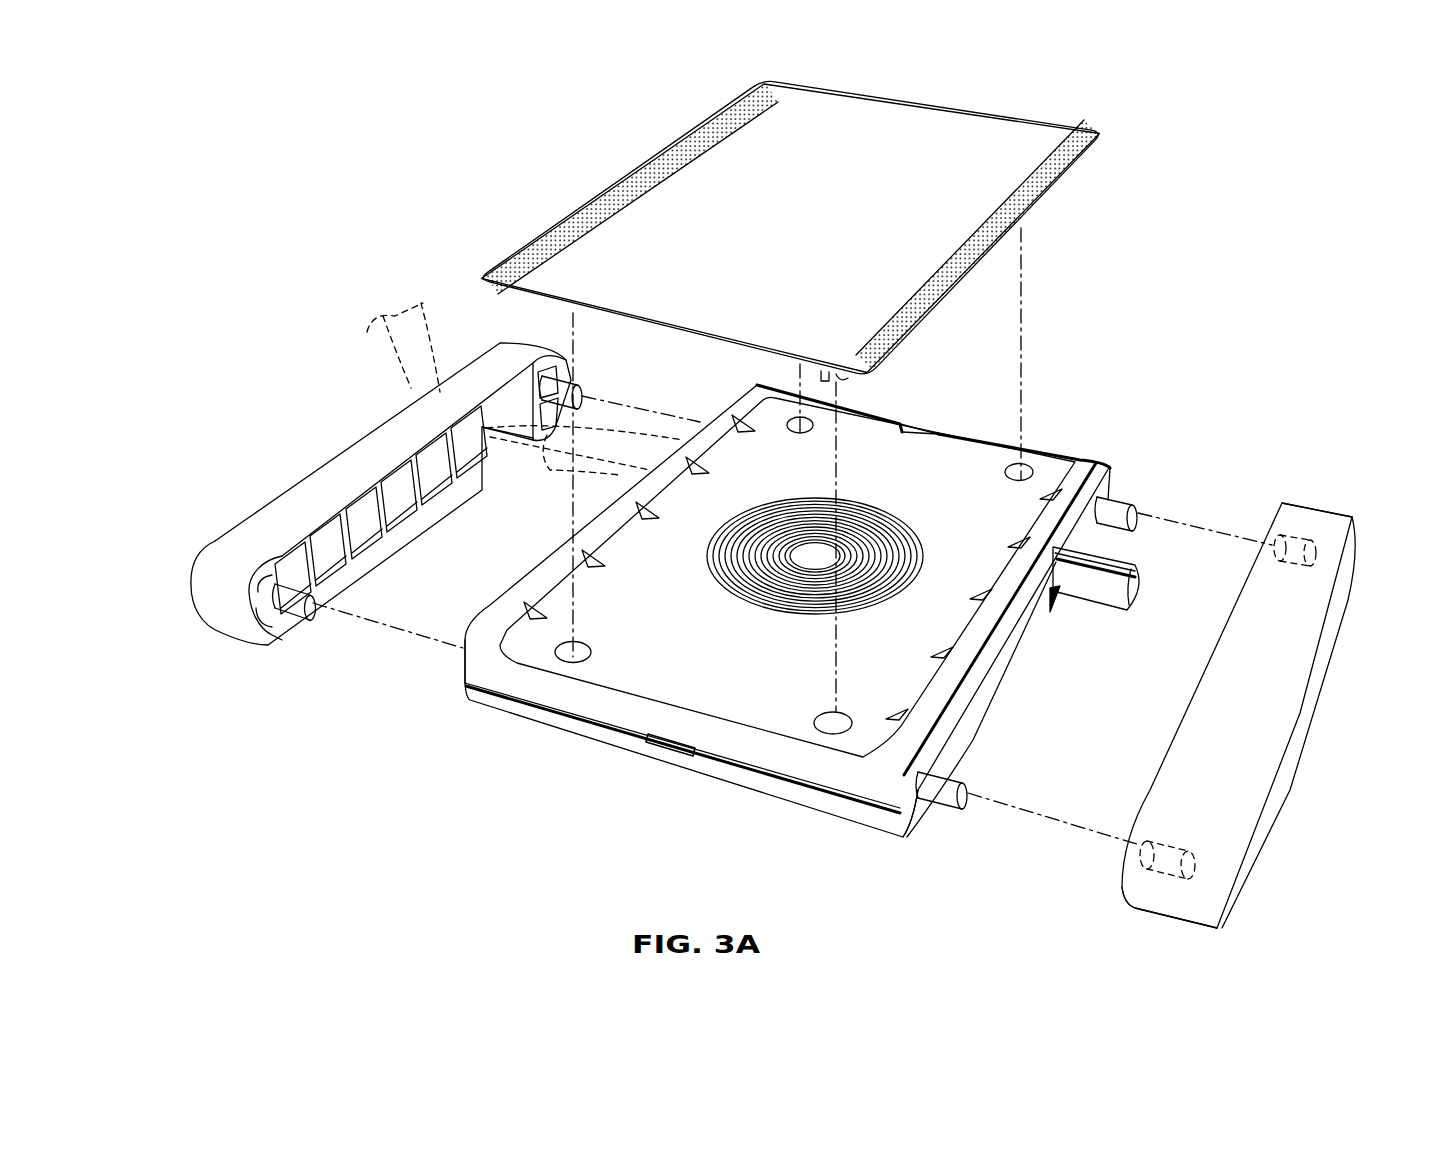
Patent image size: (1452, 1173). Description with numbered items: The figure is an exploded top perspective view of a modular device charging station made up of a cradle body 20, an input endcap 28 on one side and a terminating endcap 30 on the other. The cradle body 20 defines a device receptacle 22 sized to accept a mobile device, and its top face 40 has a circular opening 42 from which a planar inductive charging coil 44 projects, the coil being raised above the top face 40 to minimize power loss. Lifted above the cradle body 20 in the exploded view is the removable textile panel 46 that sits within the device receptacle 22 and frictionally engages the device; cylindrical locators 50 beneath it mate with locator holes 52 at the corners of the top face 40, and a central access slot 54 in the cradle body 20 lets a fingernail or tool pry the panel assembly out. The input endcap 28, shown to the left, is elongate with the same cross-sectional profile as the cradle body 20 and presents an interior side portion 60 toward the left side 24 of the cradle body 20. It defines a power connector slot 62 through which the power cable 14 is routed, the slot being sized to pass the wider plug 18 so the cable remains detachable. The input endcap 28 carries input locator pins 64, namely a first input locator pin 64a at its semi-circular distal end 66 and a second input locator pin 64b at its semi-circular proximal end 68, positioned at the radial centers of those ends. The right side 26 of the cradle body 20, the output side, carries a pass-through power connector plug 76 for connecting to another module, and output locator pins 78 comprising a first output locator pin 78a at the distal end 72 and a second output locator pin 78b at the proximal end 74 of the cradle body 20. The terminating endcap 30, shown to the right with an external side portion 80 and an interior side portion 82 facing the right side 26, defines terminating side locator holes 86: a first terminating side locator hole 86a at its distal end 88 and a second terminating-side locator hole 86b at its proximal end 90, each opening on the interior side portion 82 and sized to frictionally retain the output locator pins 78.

The power cable 14 is at (407, 347).
The plug 18 is at (630, 447).
The cradle body 20 is at (799, 631).
The device receptacle 22 is at (827, 629).
The left side 24 is at (461, 702).
The right side 26 is at (902, 848).
The input endcap 28 is at (425, 525).
The terminating endcap 30 is at (1234, 698).
The top face 40 is at (713, 667).
The circular opening 42 is at (831, 551).
The inductive charging coil 44 is at (880, 518).
The textile panel 46 is at (888, 120).
The locators 50 is at (848, 377).
The locator holes 52 is at (845, 720).
The central access slot 54 is at (936, 430).
The interior side portion 60 is at (403, 542).
The power connector slot 62 is at (500, 455).
The input locator pins 64 is at (480, 525).
The first input locator pin 64a is at (585, 387).
The second input locator pin 64b is at (295, 610).
The distal end 66 is at (425, 478).
The proximal end 68 is at (220, 636).
The distal end 72 is at (1058, 430).
The proximal end 74 is at (566, 742).
The pass-through power connector plug 76 is at (1100, 590).
The output locator pins 78 is at (1053, 654).
The first output locator pin 78a is at (1118, 498).
The second output locator pin 78b is at (941, 805).
The external side portion 80 is at (1271, 818).
The interior side portion 82 is at (1156, 749).
The terminating side locator holes 86 is at (1241, 698).
The first terminating side locator hole 86a is at (1294, 540).
The second terminating-side locator hole 86b is at (1163, 872).
The distal end 88 is at (1350, 503).
The proximal end 90 is at (1119, 914).